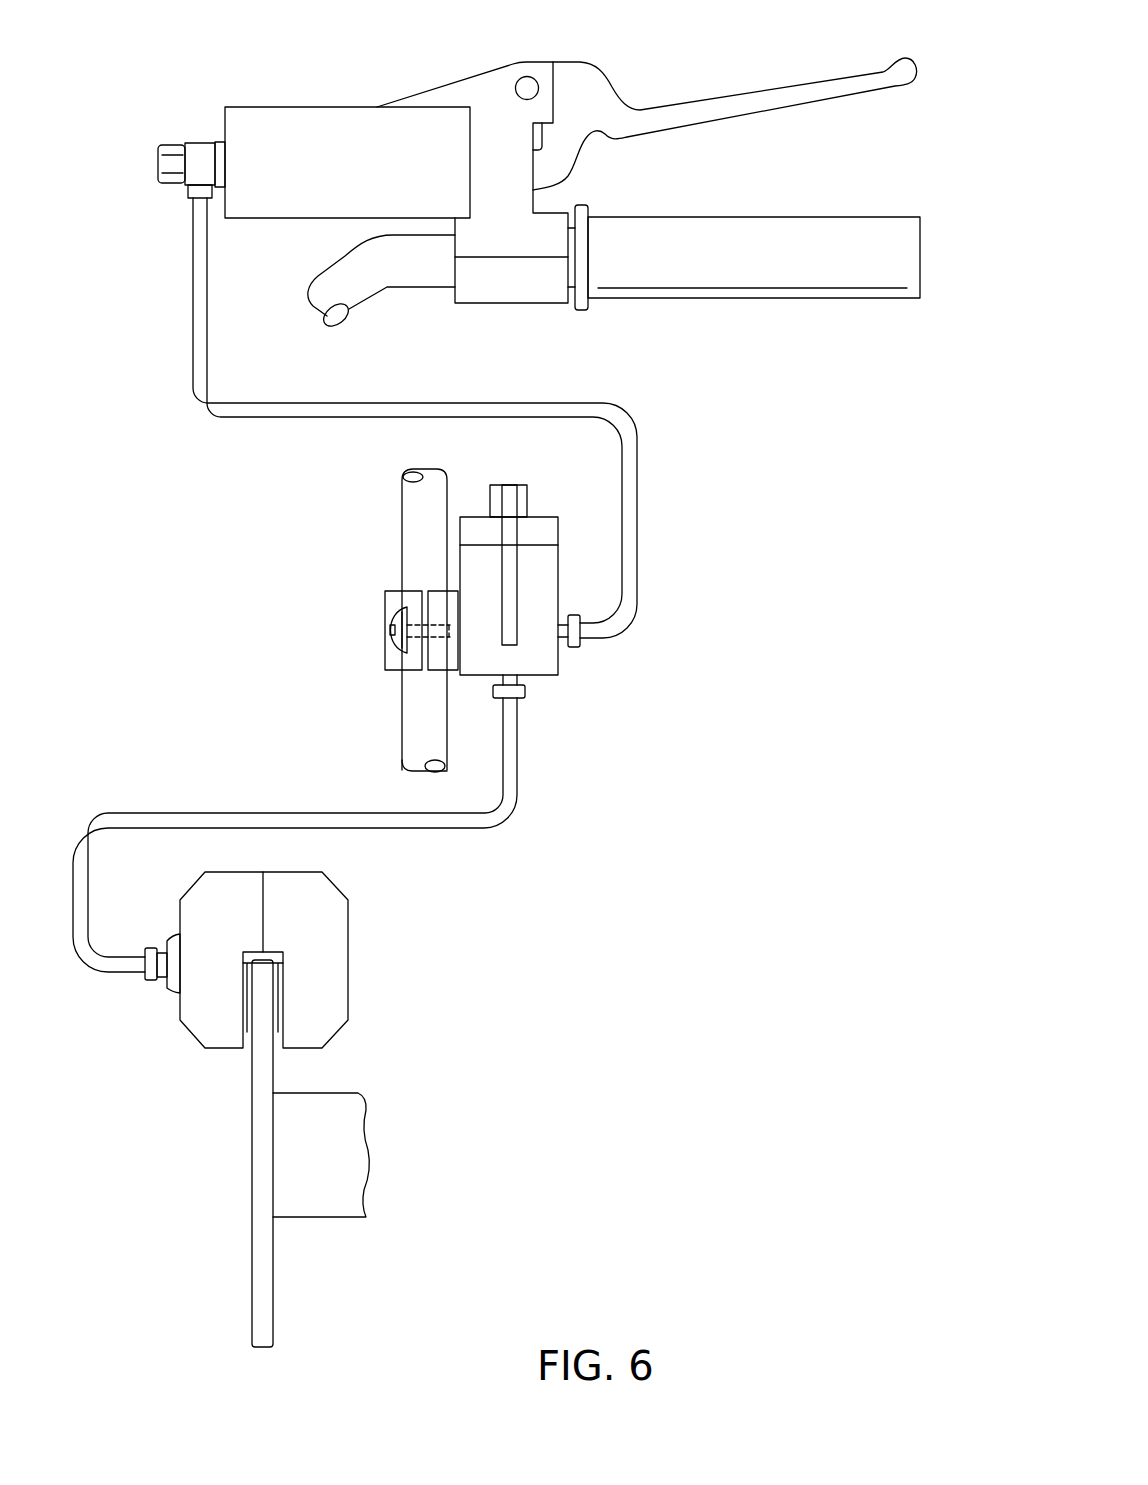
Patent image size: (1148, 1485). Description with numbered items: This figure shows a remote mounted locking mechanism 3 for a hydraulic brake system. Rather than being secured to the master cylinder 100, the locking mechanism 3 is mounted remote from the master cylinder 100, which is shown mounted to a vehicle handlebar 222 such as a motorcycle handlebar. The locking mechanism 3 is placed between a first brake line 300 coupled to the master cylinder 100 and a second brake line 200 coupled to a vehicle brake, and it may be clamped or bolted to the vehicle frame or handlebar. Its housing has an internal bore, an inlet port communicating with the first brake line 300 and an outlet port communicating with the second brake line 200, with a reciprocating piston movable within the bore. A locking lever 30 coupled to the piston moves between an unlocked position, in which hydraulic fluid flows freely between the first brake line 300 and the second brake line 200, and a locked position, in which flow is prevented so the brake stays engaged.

The master cylinder 100 is at (285, 107).
The vehicle handlebar 222 is at (383, 292).
The first brake line 300 is at (260, 420).
The locking lever 30 is at (518, 592).
The remote mounted locking mechanism 3 is at (505, 620).
The second brake line 200 is at (437, 830).